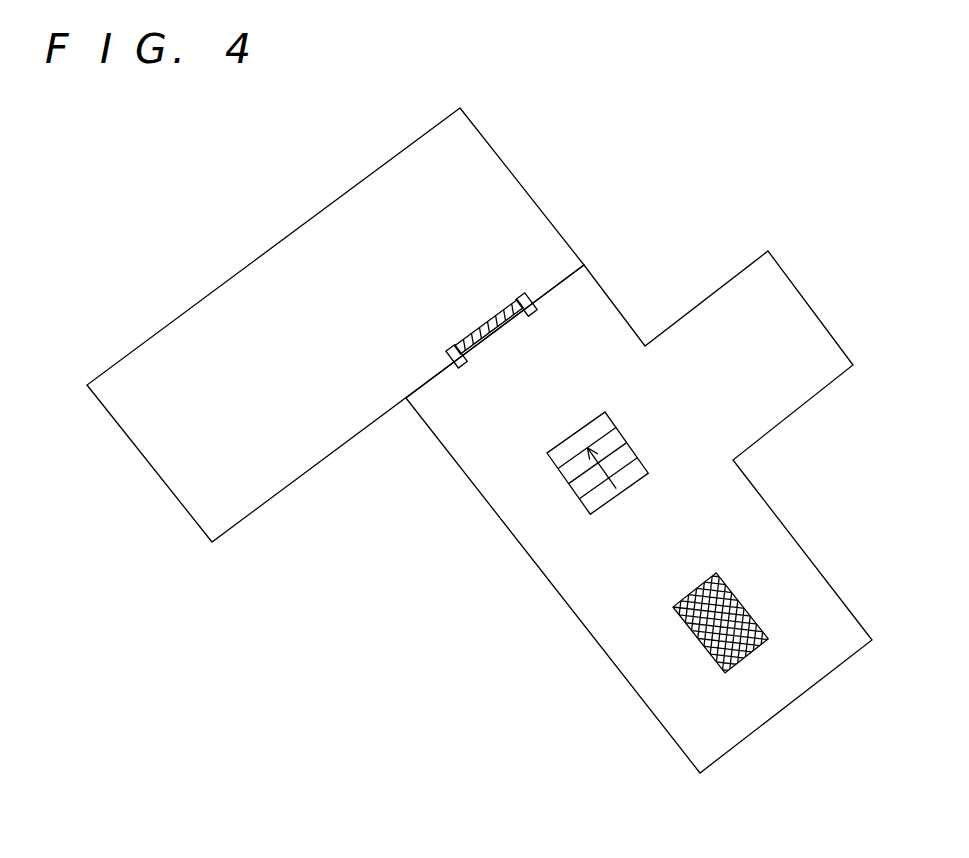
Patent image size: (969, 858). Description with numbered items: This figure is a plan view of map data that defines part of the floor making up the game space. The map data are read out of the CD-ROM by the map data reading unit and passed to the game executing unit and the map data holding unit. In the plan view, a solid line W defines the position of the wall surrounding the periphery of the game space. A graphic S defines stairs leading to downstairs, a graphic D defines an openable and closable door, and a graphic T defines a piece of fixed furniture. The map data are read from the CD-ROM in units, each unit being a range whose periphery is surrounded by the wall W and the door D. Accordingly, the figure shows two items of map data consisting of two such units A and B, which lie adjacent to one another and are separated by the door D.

The wall W is at (820, 320).
The unit B is at (508, 205).
The unit A is at (582, 325).
The door D is at (490, 338).
The stairs S is at (568, 488).
The fixed furniture T is at (745, 602).